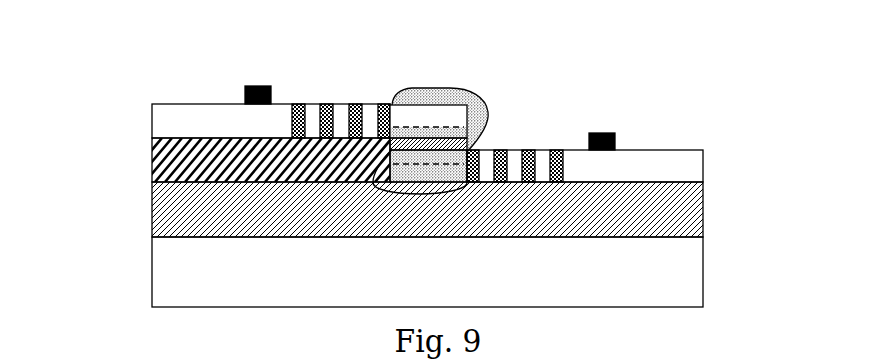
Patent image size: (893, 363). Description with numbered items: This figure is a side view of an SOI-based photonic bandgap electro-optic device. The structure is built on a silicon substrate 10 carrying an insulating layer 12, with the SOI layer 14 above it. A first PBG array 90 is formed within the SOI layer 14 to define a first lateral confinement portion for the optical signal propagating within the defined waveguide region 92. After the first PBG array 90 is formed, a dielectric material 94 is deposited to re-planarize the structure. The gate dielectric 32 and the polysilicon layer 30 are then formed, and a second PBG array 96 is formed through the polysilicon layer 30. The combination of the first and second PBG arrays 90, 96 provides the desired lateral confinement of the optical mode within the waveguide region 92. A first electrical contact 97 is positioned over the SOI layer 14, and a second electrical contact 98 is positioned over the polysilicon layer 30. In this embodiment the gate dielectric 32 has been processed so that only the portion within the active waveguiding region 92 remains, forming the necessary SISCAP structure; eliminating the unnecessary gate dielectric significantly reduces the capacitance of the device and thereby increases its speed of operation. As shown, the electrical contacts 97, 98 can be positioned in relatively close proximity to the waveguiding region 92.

The silicon substrate 10 is at (687, 272).
The insulating layer 12 is at (687, 213).
The SOI layer 14 is at (687, 168).
The polysilicon layer 30 is at (167, 117).
The gate dielectric 32 is at (440, 142).
The first PBG array 90 is at (473, 140).
The waveguide region 92 is at (417, 78).
The dielectric material 94 is at (155, 158).
The second PBG array 96 is at (287, 94).
The first electrical contact 97 is at (602, 132).
The second electrical contact 98 is at (262, 87).